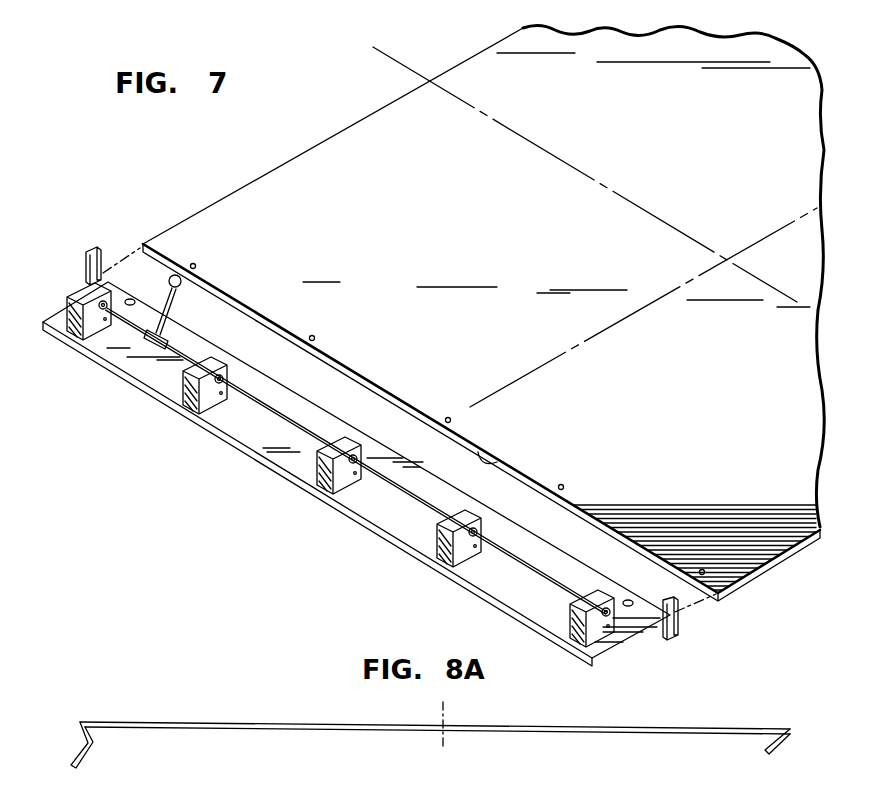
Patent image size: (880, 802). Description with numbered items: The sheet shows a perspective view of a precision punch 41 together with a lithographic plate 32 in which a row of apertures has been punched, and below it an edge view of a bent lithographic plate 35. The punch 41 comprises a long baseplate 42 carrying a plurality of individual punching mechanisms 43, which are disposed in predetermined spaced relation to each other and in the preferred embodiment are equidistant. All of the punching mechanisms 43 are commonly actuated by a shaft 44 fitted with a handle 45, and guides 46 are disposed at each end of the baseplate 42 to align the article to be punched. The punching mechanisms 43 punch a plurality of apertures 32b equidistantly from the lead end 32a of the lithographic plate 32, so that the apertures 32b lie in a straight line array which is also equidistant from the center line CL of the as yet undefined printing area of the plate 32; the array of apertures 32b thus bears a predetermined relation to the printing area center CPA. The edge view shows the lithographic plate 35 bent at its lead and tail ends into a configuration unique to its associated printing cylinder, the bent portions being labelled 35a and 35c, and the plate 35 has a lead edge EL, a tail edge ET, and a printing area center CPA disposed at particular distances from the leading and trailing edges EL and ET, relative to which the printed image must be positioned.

In FIG. 7, the lithographic plate 32 is at (328, 137).
In FIG. 7, the lead end 32a is at (484, 459).
In FIG. 7, the apertures 32b is at (196, 267).
In FIG. 7, the punch 41 is at (220, 466).
In FIG. 7, the baseplate 42 is at (287, 459).
In FIG. 7, the punching mechanisms 43 is at (98, 341).
In FIG. 7, the shaft 44 is at (410, 496).
In FIG. 7, the handle 45 is at (178, 296).
In FIG. 7, the guides 46 is at (91, 250).
In FIG. 8A, the lithographic plate 35 is at (219, 714).
In FIG. 8A, the strip leading end tab 35a is at (779, 757).
In FIG. 8A, the strip trailing end tab 35c is at (77, 750).
In FIG. 7, the center line CL is at (394, 60).
In FIG. 7, the printing area center CPA is at (725, 258).
In FIG. 8A, the printing area center CPA is at (453, 723).
In FIG. 8A, the tail edge ET is at (79, 720).
In FIG. 8A, the lead edge EL is at (792, 731).